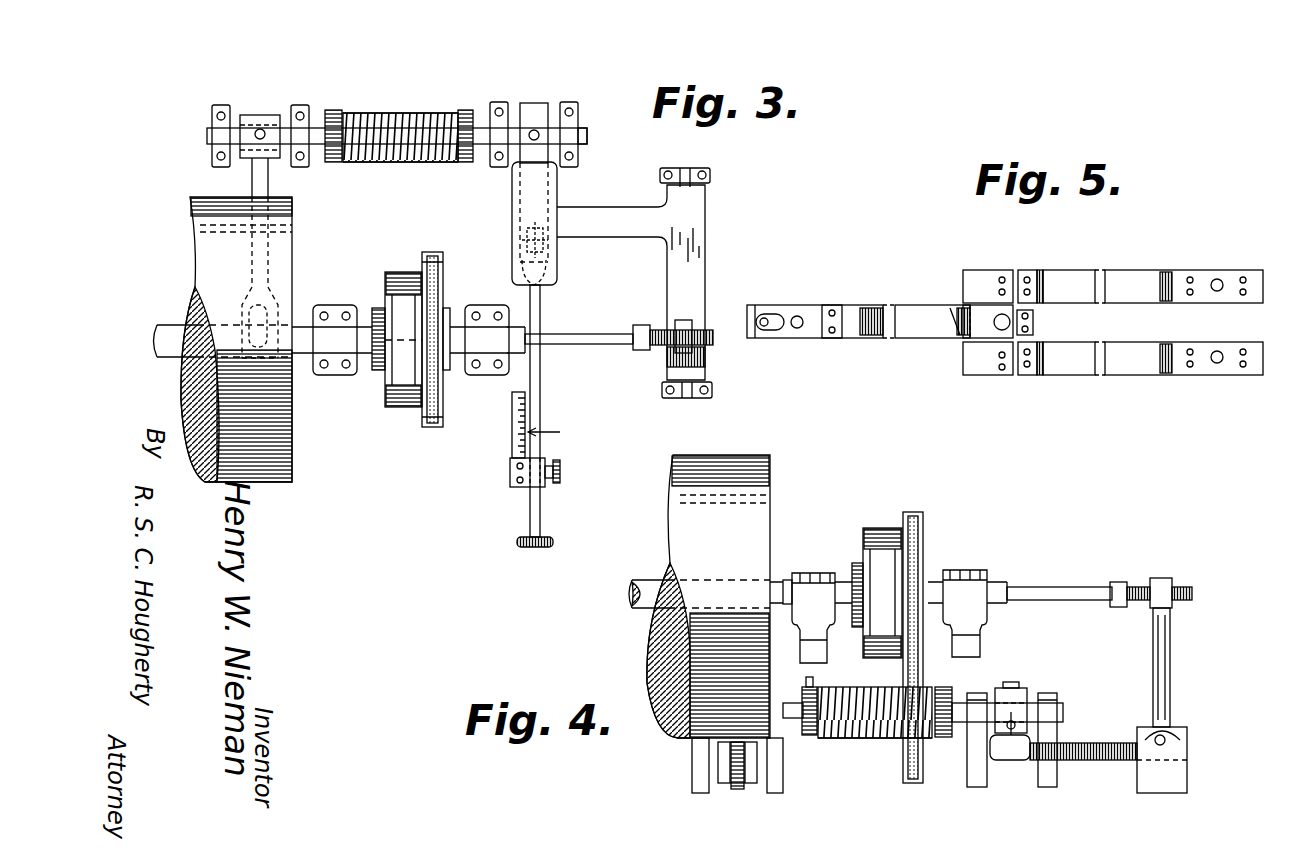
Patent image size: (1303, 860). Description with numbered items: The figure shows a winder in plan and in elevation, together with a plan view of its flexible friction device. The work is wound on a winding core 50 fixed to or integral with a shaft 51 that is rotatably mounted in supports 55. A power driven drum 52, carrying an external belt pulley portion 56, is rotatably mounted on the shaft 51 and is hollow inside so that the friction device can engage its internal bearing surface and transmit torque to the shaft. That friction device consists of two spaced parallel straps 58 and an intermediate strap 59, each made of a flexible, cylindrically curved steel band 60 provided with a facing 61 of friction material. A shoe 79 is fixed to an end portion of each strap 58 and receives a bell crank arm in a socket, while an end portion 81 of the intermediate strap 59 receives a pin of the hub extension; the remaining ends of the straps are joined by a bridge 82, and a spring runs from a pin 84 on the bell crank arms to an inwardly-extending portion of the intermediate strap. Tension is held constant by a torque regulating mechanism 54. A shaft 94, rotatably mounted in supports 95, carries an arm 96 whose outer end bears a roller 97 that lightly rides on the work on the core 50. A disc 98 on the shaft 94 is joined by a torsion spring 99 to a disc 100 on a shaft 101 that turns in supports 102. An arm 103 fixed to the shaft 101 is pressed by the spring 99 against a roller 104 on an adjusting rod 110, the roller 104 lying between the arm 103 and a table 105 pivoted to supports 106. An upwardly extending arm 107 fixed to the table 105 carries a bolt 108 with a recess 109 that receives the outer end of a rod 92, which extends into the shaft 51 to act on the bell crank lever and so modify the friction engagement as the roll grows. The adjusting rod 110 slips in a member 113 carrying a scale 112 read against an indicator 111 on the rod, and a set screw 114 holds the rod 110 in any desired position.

In FIG. 3, the winding core 50 is at (178, 352).
In FIG. 4, the winding core 50 is at (645, 606).
In FIG. 3, the shaft 51 is at (378, 308).
In FIG. 4, the shaft 51 is at (788, 582).
In FIG. 3, the power driven drum 52 is at (402, 272).
In FIG. 4, the power driven drum 52 is at (884, 528).
In FIG. 3, the torque regulating mechanism 54 is at (425, 96).
In FIG. 4, the torque regulating mechanism 54 is at (870, 776).
In FIG. 3, the supports 55 is at (345, 376).
In FIG. 4, the supports 55 is at (822, 573).
In FIG. 3, the belt pulley portion 56 is at (440, 252).
In FIG. 4, the belt pulley portion 56 is at (922, 520).
In FIG. 5, the spaced parallel straps 58 is at (1140, 345).
In FIG. 5, the intermediate strap 59 is at (862, 338).
In FIG. 5, the steel bands 60 is at (834, 305).
In FIG. 5, the facings of friction material 61 is at (915, 305).
In FIG. 5, the shoe 79 is at (1220, 278).
In FIG. 5, the end portion of strap 81 is at (799, 316).
In FIG. 5, the bridge 82 is at (995, 345).
In FIG. 5, the pin 84 is at (960, 335).
In FIG. 3, the rod 92 is at (600, 334).
In FIG. 4, the rod 92 is at (1045, 587).
In FIG. 3, the shaft 94 is at (210, 140).
In FIG. 4, the shaft 94 is at (795, 718).
In FIG. 3, the supports 95 is at (275, 93).
In FIG. 4, the supports 95 is at (755, 805).
In FIG. 3, the arm 96 is at (252, 188).
In FIG. 4, the arm 96 is at (718, 746).
In FIG. 3, the roller 97 is at (253, 322).
In FIG. 4, the roller 97 is at (735, 752).
In FIG. 3, the disc 98 is at (333, 110).
In FIG. 4, the disc 98 is at (808, 687).
In FIG. 3, the torsion spring 99 is at (390, 164).
In FIG. 4, the torsion spring 99 is at (862, 687).
In FIG. 3, the disc 100 is at (467, 110).
In FIG. 4, the disc 100 is at (942, 737).
In FIG. 3, the shaft 101 is at (588, 136).
In FIG. 4, the shaft 101 is at (1063, 712).
In FIG. 3, the supports 102 is at (550, 90).
In FIG. 4, the supports 102 is at (1030, 797).
In FIG. 3, the arm 103 is at (548, 190).
In FIG. 4, the arm 103 is at (1000, 688).
In FIG. 3, the roller 104 is at (548, 242).
In FIG. 4, the roller 104 is at (1015, 710).
In FIG. 3, the table 105 is at (512, 195).
In FIG. 4, the table 105 is at (1030, 750).
In FIG. 3, the supports 106 is at (700, 168).
In FIG. 4, the supports 106 is at (1187, 775).
In FIG. 3, the upwardly extending arm 107 is at (690, 320).
In FIG. 4, the upwardly extending arm 107 is at (1170, 680).
In FIG. 3, the bolt 108 is at (712, 340).
In FIG. 4, the bolt 108 is at (1183, 587).
In FIG. 3, the recess 109 is at (640, 350).
In FIG. 4, the recess 109 is at (1120, 582).
In FIG. 3, the adjusting rod 110 is at (540, 376).
In FIG. 3, the indicator 111 is at (566, 432).
In FIG. 3, the scale 112 is at (512, 420).
In FIG. 3, the member 113 is at (510, 478).
In FIG. 3, the set screw 114 is at (560, 470).